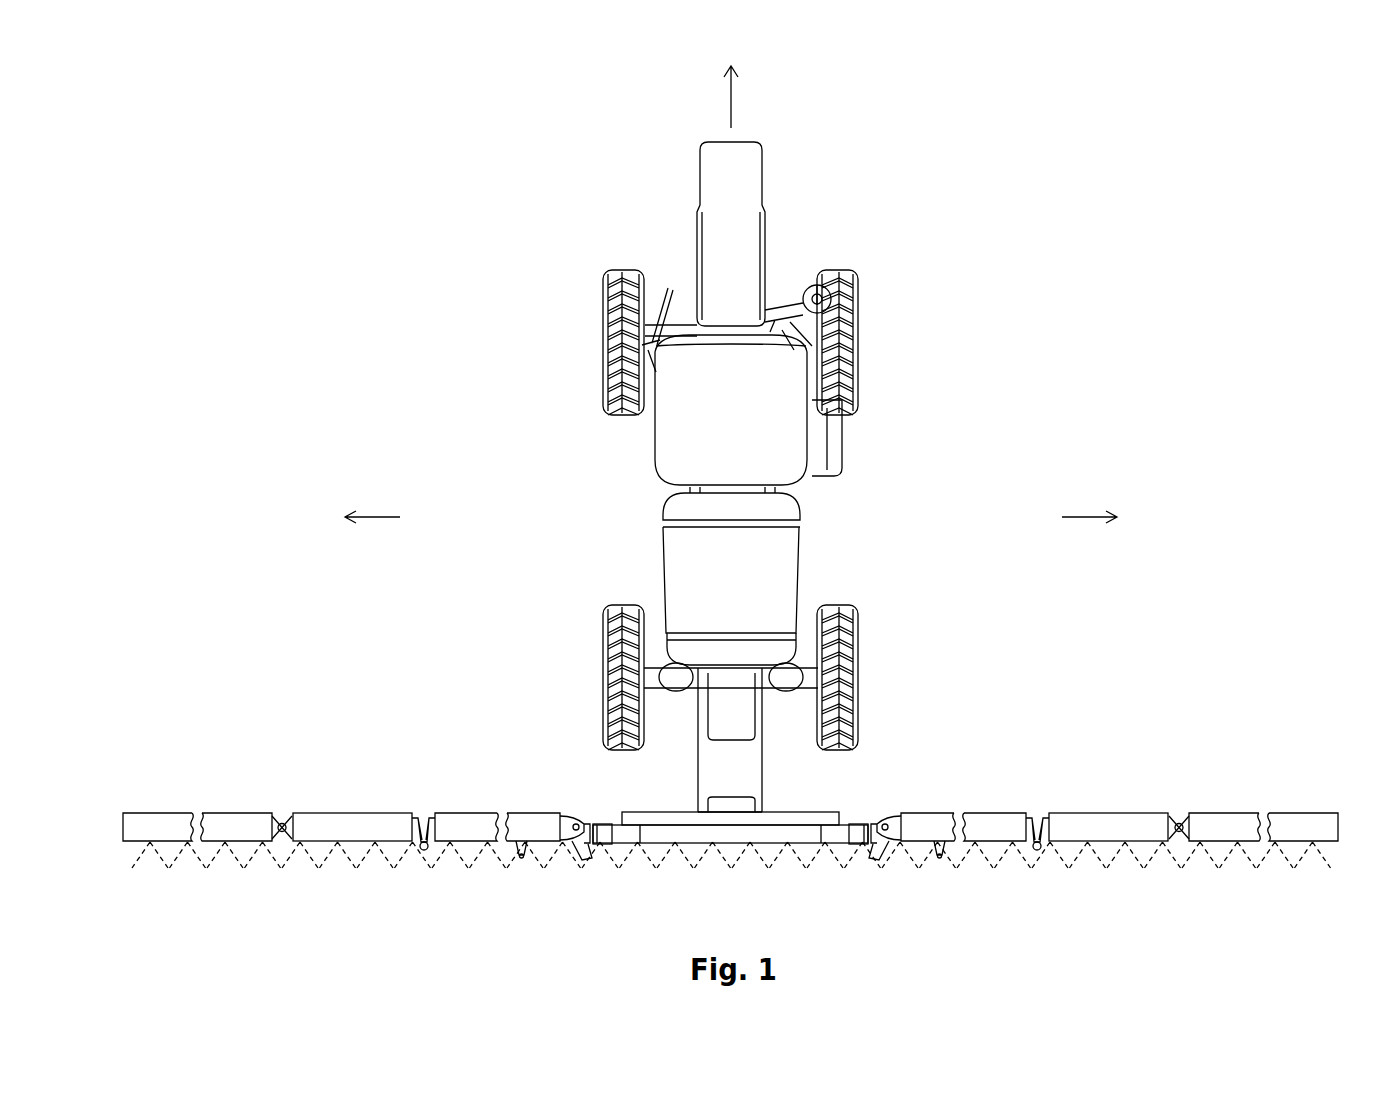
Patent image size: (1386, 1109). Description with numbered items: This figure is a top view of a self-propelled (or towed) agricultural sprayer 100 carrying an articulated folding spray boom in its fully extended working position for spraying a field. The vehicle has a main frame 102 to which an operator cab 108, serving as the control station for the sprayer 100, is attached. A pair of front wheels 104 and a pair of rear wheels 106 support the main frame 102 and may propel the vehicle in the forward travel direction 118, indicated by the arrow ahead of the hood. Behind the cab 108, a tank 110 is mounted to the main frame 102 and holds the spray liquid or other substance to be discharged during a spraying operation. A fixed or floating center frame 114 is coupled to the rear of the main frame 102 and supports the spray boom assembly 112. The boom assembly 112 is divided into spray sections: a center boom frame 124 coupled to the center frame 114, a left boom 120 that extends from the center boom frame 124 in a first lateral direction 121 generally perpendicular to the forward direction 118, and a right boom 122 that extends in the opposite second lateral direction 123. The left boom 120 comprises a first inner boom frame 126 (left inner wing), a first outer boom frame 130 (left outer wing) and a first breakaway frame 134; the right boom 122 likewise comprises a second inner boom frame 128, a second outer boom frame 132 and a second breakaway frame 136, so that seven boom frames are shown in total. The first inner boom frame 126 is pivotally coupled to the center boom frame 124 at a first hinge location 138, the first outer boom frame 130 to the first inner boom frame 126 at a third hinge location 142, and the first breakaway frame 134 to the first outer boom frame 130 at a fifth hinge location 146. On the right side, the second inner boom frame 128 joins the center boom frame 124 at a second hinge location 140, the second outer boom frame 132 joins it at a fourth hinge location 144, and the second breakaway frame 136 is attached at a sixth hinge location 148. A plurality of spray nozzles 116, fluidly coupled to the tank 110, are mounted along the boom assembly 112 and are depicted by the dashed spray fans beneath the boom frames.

The agricultural sprayer 100 is at (1209, 179).
The vehicle main frame 102 is at (692, 326).
The front wheels 104 is at (600, 314).
The rear wheels 106 is at (602, 682).
The operator cab 108 is at (685, 433).
The tank 110 is at (778, 568).
The spray boom assembly 112 is at (1353, 852).
The center frame 114 is at (740, 768).
The spray nozzles 116 is at (152, 858).
The forward travel direction 118 is at (732, 97).
The left boom 120 is at (122, 783).
The first lateral direction 121 is at (380, 517).
The right boom 122 is at (1339, 783).
The second lateral direction 123 is at (1080, 517).
The center boom frame 124 is at (773, 832).
The first inner boom frame 126 is at (477, 822).
The second inner boom frame 128 is at (978, 822).
The first outer boom frame 130 is at (355, 822).
The second outer boom frame 132 is at (1102, 822).
The first breakaway frame 134 is at (220, 822).
The second breakaway frame 136 is at (1242, 822).
The first hinge location 138 is at (579, 795).
The second hinge location 140 is at (884, 795).
The third hinge location 142 is at (424, 798).
The fourth hinge location 144 is at (1039, 798).
The fifth hinge location 146 is at (283, 798).
The sixth hinge location 148 is at (1182, 798).